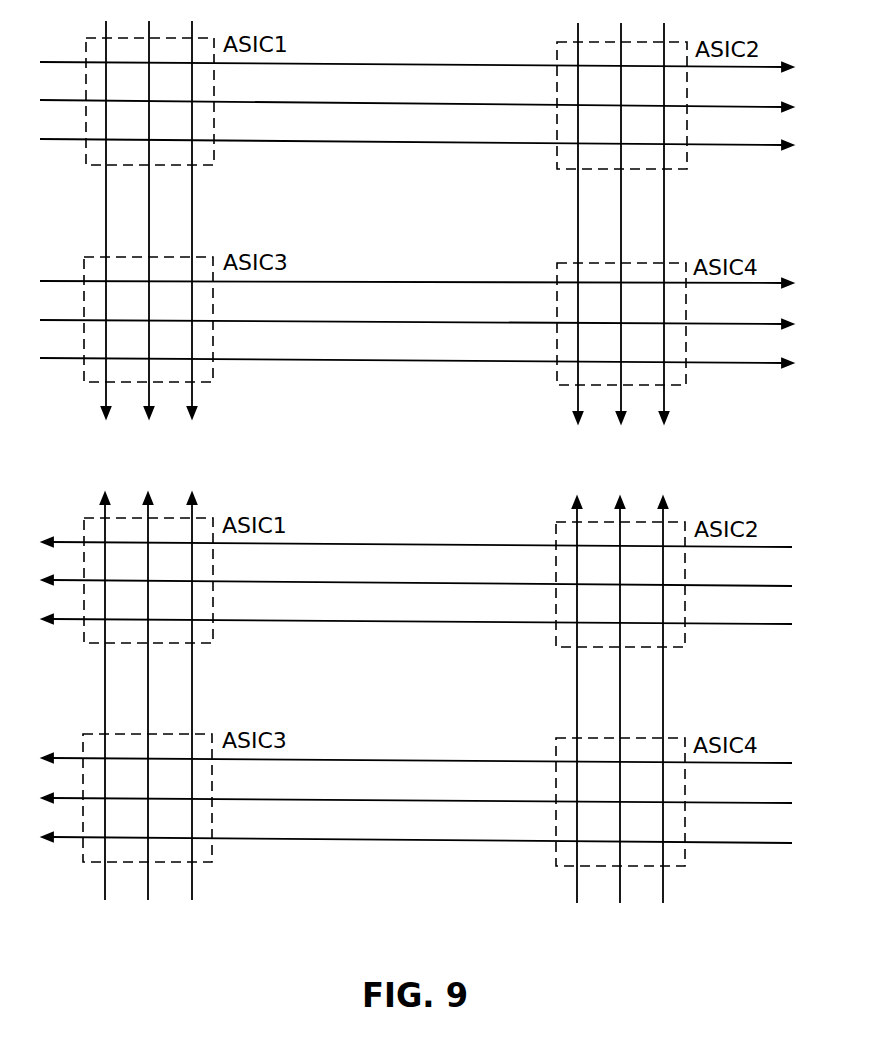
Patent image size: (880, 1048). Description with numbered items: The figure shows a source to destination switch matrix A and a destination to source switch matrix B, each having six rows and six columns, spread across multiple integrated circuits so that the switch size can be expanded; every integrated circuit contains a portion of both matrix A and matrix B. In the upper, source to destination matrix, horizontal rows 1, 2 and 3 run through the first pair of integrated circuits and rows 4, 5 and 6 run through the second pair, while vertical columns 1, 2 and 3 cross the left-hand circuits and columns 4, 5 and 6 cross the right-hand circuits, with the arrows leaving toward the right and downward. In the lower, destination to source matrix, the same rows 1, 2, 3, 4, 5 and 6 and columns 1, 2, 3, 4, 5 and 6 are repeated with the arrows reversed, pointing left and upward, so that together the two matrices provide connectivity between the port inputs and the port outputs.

The signal line 1 is at (408, 474).
The signal line 2 is at (408, 474).
The signal line 3 is at (408, 474).
The signal line 4 is at (408, 478).
The signal line 5 is at (408, 478).
The signal line 6 is at (408, 478).